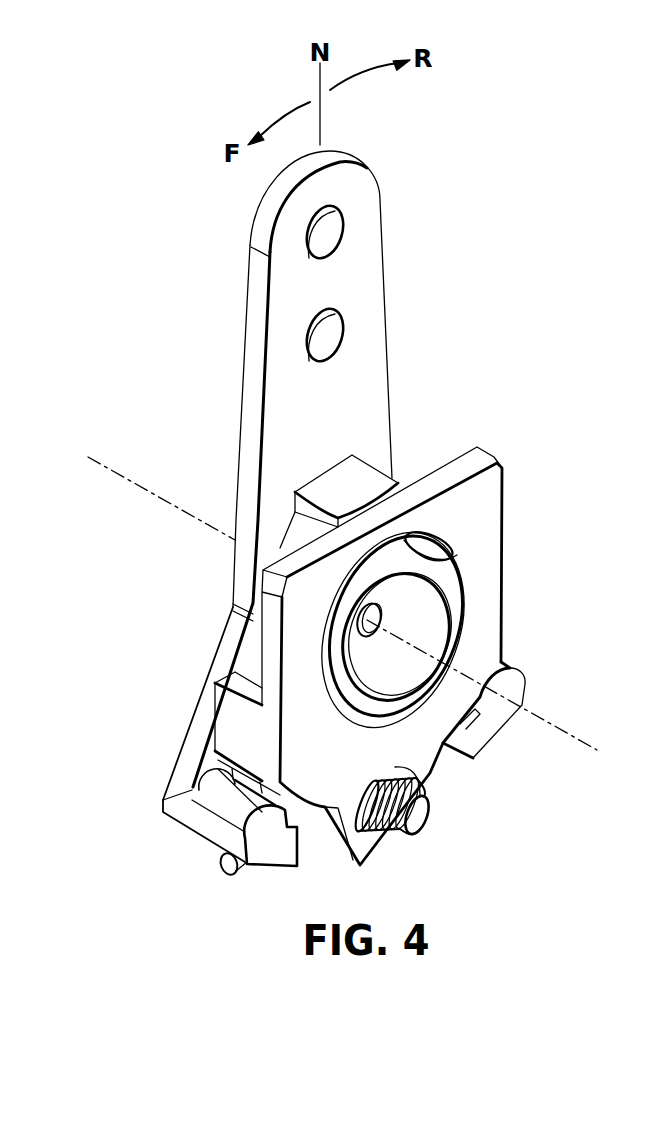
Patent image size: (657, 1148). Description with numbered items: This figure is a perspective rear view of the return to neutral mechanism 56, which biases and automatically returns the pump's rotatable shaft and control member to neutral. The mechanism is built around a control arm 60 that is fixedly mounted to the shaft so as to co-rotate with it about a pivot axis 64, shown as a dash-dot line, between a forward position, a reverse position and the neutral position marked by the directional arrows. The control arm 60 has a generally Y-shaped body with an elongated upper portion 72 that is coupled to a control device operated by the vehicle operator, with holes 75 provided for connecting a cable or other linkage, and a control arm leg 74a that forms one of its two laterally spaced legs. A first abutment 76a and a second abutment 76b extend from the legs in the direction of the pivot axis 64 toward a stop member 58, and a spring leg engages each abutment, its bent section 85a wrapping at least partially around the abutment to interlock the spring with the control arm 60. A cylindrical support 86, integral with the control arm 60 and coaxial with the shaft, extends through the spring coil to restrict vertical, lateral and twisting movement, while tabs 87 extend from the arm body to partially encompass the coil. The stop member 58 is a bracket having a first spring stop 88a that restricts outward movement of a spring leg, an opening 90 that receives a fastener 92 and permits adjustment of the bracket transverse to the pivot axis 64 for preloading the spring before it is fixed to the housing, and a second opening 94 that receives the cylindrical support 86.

The return to neutral mechanism 56 is at (185, 112).
The stop member 58 is at (499, 458).
The control arm 60 is at (298, 475).
The pivot axis 64 is at (148, 492).
The elongated upper portion 72 is at (344, 265).
The holes 75 is at (330, 337).
The control arm leg 74a is at (185, 758).
The first abutment 76a is at (228, 803).
The second abutment 76b is at (515, 680).
The bent section 85a is at (243, 876).
The cylindrical support 86 is at (453, 593).
The tabs 87 is at (362, 480).
The first spring stop 88a is at (235, 710).
The opening 90 is at (423, 833).
The fastener 92 is at (413, 818).
The second opening 94 is at (453, 553).